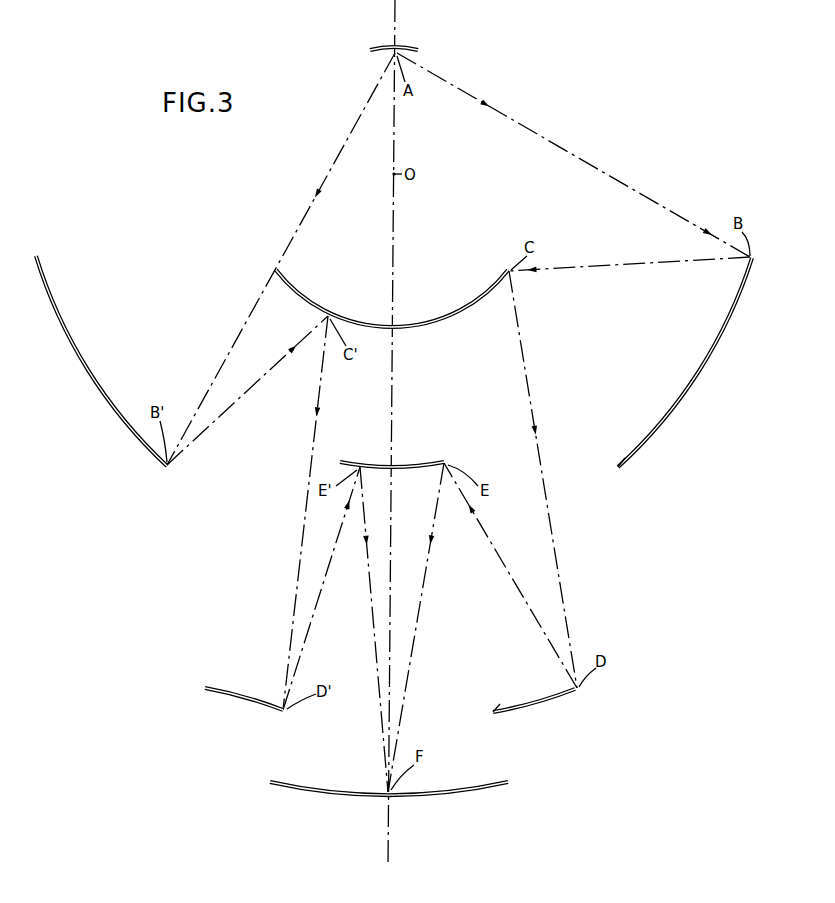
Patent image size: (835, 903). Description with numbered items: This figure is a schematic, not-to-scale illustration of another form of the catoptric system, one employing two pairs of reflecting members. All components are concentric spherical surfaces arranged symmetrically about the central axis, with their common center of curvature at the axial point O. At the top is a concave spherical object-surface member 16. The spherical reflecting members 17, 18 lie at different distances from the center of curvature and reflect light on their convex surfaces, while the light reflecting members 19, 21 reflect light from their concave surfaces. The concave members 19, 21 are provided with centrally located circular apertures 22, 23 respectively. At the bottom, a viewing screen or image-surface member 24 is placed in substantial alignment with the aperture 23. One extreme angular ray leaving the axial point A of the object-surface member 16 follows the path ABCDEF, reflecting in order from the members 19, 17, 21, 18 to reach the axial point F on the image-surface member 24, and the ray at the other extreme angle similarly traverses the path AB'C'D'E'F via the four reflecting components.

The concave spherical object-surface member 16 is at (410, 48).
The spherical reflecting member 17 is at (487, 292).
The spherical reflecting member 18 is at (405, 462).
The light reflecting member 19 is at (66, 337).
The light reflecting member 21 is at (210, 688).
The circular aperture 22 is at (616, 466).
The circular aperture 23 is at (494, 712).
The viewing screen or image-surface member 24 is at (486, 790).